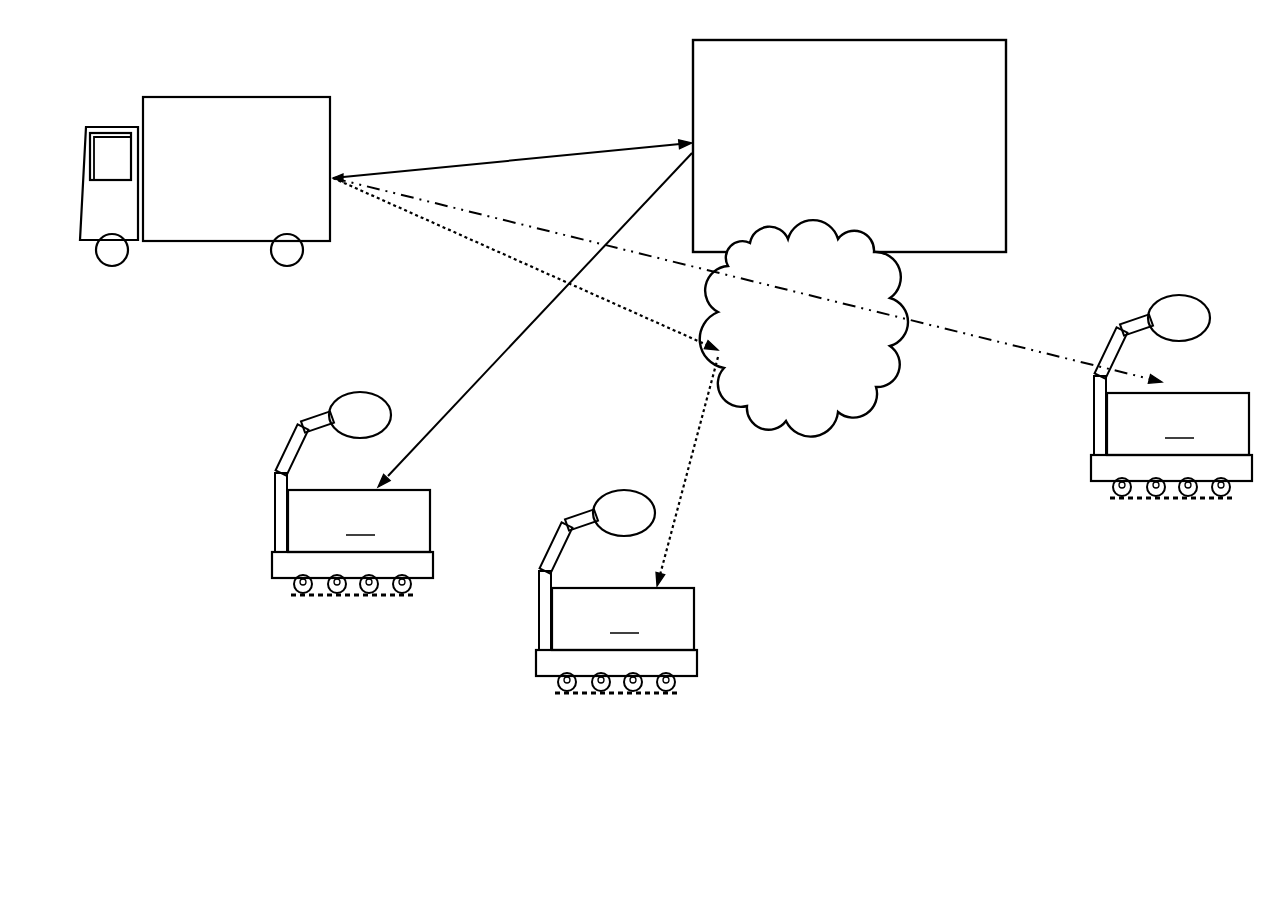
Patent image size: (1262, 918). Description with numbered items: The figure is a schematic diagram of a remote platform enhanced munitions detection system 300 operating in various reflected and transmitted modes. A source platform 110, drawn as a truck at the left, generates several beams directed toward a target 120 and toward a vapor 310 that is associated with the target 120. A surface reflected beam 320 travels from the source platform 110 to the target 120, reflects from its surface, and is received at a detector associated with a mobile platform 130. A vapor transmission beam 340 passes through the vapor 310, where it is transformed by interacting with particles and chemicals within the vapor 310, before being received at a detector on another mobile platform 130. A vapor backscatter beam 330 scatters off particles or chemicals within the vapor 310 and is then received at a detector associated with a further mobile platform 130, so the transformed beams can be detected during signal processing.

The remote platform enhanced munitions detection system 300 is at (349, 47).
The source platform 110 is at (226, 210).
The target 120 is at (835, 168).
The mobile platform 130 is at (762, 494).
The vapor 310 is at (797, 372).
The surface reflected beam 320 is at (493, 368).
The vapor backscatter beam 330 is at (697, 445).
The vapor transmission beam 340 is at (1027, 348).